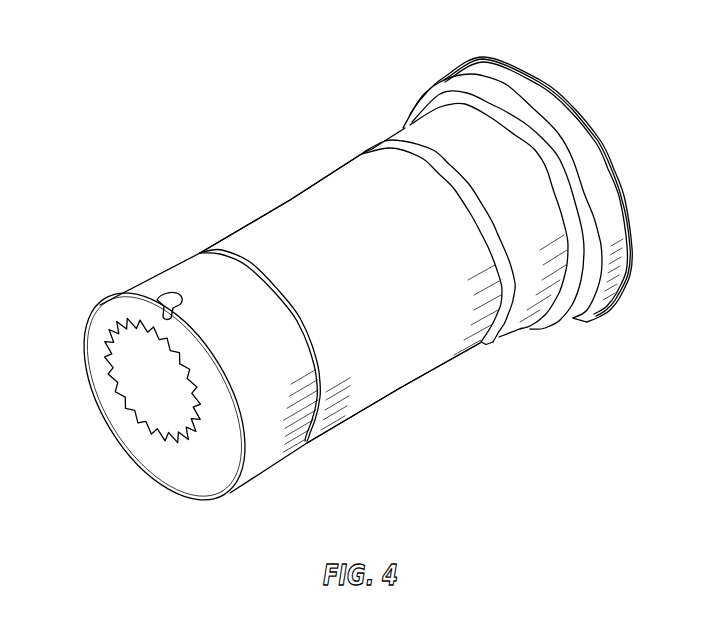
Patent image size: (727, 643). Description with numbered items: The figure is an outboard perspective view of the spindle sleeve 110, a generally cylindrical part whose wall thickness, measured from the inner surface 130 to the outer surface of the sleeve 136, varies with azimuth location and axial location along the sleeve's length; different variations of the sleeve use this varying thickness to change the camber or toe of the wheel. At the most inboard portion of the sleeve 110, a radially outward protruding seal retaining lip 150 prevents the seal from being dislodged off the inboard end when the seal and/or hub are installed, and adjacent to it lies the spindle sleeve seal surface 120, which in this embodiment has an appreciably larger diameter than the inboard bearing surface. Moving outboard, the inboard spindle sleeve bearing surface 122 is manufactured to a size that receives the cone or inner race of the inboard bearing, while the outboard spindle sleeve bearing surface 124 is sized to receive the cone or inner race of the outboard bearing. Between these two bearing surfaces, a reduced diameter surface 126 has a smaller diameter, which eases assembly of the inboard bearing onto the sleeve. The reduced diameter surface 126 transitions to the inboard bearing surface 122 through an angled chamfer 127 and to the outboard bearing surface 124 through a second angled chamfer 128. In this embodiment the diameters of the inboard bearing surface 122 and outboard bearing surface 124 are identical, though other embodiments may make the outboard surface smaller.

The spindle sleeve 110 is at (199, 104).
The spindle sleeve seal surface 120 is at (505, 76).
The seal retaining lip 150 is at (574, 102).
The inboard spindle sleeve bearing surface 122 is at (410, 130).
The outboard spindle sleeve bearing surface 124 is at (195, 272).
The reduced diameter surface 126 is at (407, 373).
The angled chamfer 127 is at (487, 349).
The second angled chamfer 128 is at (307, 447).
The inner surface 130 is at (147, 391).
The outer surface of the sleeve 136 is at (300, 214).